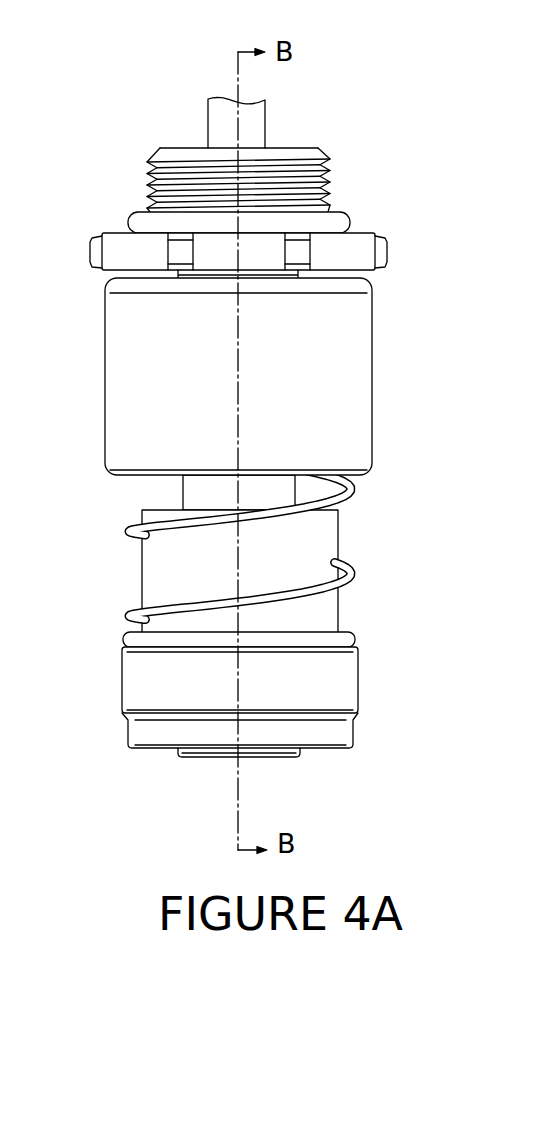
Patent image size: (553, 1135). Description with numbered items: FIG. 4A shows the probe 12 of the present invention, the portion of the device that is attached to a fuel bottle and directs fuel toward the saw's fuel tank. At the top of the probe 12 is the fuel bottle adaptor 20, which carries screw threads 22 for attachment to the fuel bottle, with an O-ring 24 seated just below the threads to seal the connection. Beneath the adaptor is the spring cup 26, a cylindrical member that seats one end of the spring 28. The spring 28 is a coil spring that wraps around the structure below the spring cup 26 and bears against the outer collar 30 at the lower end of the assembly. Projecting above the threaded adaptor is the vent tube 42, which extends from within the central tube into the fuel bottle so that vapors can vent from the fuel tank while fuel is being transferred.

The probe 12 is at (116, 126).
The vent tube 42 is at (248, 127).
The screw threads 22 is at (310, 162).
The O-ring 24 is at (143, 223).
The fuel bottle adaptor 20 is at (358, 250).
The spring cup 26 is at (320, 413).
The spring 28 is at (342, 502).
The outer collar 30 is at (360, 677).